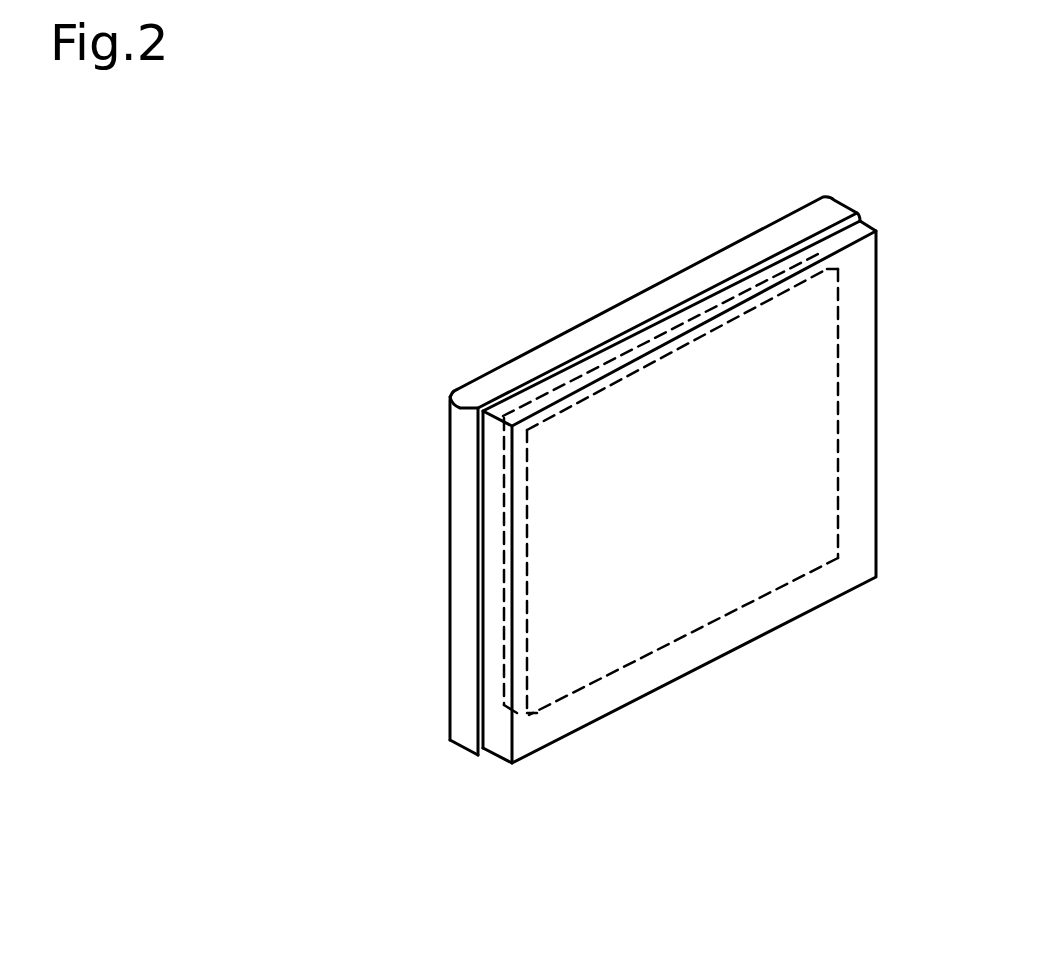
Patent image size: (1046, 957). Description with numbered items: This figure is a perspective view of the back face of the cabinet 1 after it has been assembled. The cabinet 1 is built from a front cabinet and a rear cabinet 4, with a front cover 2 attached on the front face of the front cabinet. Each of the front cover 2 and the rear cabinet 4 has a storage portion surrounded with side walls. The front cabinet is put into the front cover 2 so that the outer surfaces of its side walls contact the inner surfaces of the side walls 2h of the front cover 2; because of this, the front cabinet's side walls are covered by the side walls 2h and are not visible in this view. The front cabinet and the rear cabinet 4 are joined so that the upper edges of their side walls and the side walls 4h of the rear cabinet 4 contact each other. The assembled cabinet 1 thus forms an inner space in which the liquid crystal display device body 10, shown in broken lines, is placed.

The cabinet 1 is at (866, 585).
The front cover 2 is at (823, 197).
The side walls of the front cover 2h is at (459, 731).
The rear cabinet 4 is at (875, 232).
The side walls of the rear cabinet 4h is at (498, 723).
The liquid crystal display device body 10 is at (637, 575).